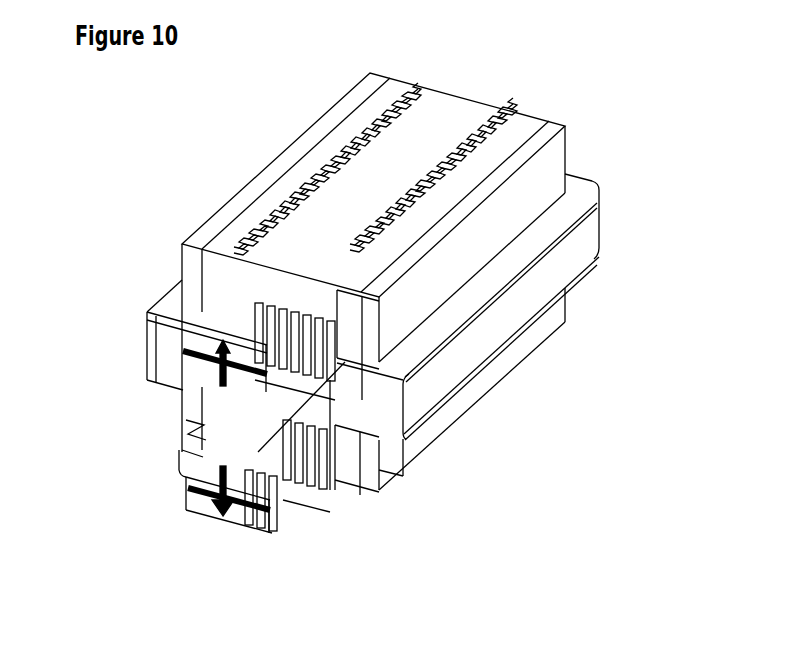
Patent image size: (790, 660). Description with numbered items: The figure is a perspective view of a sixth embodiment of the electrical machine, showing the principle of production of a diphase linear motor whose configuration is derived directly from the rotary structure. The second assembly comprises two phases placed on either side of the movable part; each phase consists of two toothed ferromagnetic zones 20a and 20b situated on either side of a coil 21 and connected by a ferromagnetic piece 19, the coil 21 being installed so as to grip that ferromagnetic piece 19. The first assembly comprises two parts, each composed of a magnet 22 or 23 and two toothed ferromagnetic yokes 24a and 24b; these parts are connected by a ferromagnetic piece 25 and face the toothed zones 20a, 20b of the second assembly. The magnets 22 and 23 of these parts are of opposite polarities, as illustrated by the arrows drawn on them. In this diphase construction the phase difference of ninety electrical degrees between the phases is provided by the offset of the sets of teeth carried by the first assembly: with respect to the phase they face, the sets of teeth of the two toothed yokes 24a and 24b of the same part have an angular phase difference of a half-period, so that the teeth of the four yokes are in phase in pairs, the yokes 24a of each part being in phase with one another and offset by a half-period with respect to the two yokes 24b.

The ferromagnetic piece 19 is at (551, 126).
The coil 21 is at (568, 256).
The toothed ferromagnetic zone 20a is at (349, 329).
The toothed ferromagnetic zone 20b is at (353, 460).
The magnet 22 is at (150, 337).
The magnet 23 is at (186, 481).
The ferromagnetic piece 25 is at (183, 422).
The toothed ferromagnetic yoke 24a is at (288, 372).
The toothed ferromagnetic yoke 24b is at (300, 492).